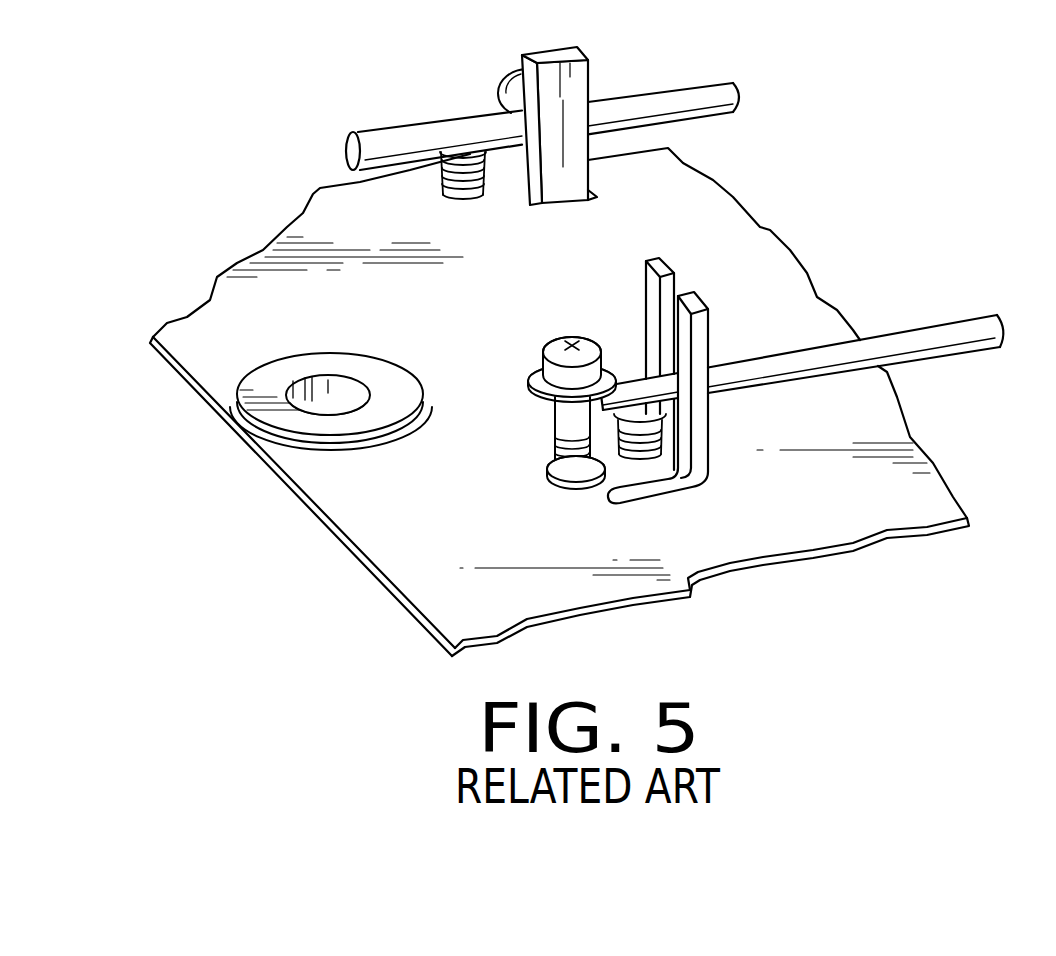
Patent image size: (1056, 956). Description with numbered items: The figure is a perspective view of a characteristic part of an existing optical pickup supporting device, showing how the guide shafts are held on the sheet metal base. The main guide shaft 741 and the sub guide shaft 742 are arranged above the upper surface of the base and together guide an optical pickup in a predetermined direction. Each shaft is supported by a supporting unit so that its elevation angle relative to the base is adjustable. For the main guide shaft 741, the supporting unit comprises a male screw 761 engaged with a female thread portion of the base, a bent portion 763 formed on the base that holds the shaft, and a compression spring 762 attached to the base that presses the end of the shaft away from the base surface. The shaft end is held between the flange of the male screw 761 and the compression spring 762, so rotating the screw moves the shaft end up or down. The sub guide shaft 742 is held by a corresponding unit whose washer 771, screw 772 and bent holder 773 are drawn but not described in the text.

The main guide shaft 741 is at (922, 340).
The sub guide shaft 742 is at (693, 103).
The male screw 761 is at (582, 479).
The compression spring 762 is at (650, 447).
The bent portion 763 is at (710, 338).
The washer 771 is at (511, 88).
The screw 772 is at (447, 192).
The bracket 773 is at (577, 76).